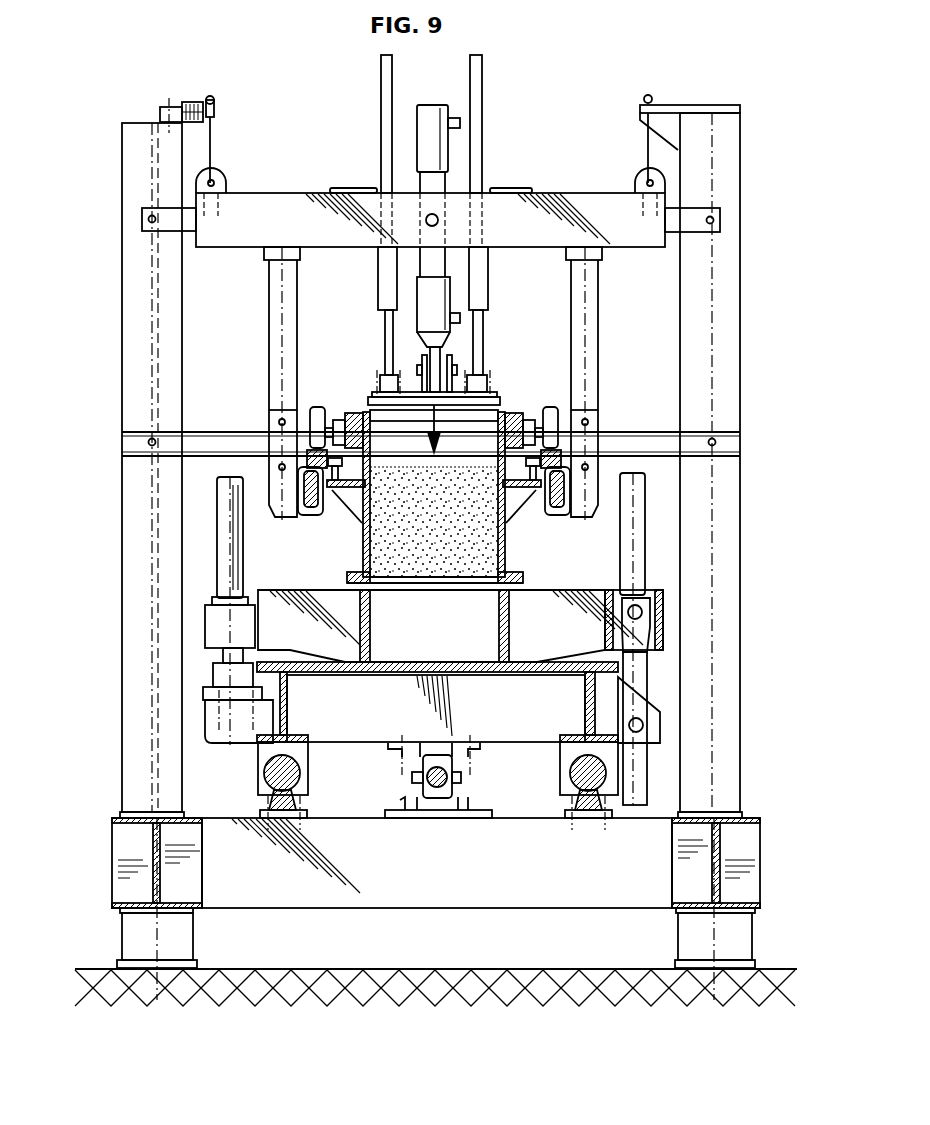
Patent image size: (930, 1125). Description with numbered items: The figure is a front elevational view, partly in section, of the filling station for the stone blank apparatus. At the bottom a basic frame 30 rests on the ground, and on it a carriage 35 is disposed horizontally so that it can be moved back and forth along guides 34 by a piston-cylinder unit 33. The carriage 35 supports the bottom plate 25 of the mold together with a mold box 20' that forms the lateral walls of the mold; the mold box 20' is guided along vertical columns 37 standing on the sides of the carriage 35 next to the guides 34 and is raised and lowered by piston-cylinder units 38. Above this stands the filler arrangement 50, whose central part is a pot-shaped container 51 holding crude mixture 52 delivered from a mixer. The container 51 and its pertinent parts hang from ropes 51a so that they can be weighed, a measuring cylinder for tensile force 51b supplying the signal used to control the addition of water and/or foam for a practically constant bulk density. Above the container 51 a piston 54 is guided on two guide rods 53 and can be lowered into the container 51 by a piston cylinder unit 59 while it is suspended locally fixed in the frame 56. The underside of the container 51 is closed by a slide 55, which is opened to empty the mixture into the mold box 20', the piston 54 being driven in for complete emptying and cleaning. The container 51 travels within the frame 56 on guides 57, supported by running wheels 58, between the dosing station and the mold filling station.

The frame 56 is at (132, 382).
The measuring cylinder for tensile force 51b is at (188, 102).
The ropes 51a is at (211, 130).
The filler arrangement 50 is at (330, 530).
The guide rods 53 is at (385, 325).
The piston cylinder unit 59 is at (452, 285).
The piston 54 is at (452, 406).
The pot-shaped container 51 is at (363, 545).
The crude mixture 52 is at (473, 507).
The guides 57 is at (312, 407).
The running wheels 58 is at (327, 413).
The vertical columns 37 is at (230, 523).
The piston-cylinder units 38 is at (633, 805).
The mold box 20' is at (450, 626).
The slide 55 is at (403, 583).
The bottom plate 25 is at (413, 662).
The carriage 35 is at (374, 725).
The guides 34 is at (290, 775).
The piston-cylinder unit 33 is at (435, 767).
The basic frame 30 is at (407, 883).